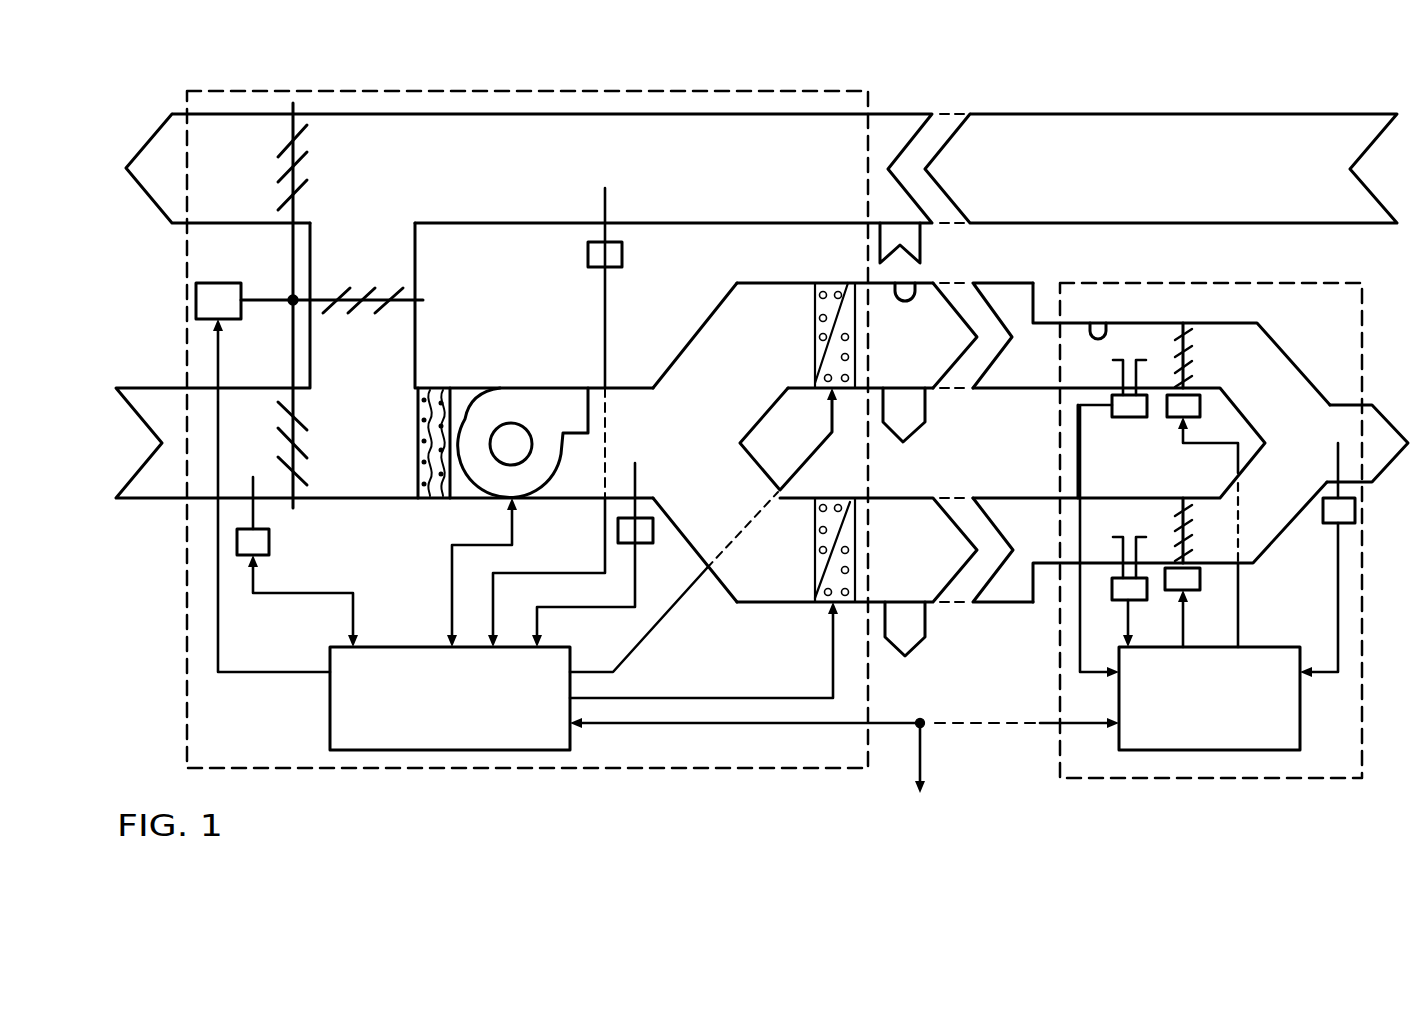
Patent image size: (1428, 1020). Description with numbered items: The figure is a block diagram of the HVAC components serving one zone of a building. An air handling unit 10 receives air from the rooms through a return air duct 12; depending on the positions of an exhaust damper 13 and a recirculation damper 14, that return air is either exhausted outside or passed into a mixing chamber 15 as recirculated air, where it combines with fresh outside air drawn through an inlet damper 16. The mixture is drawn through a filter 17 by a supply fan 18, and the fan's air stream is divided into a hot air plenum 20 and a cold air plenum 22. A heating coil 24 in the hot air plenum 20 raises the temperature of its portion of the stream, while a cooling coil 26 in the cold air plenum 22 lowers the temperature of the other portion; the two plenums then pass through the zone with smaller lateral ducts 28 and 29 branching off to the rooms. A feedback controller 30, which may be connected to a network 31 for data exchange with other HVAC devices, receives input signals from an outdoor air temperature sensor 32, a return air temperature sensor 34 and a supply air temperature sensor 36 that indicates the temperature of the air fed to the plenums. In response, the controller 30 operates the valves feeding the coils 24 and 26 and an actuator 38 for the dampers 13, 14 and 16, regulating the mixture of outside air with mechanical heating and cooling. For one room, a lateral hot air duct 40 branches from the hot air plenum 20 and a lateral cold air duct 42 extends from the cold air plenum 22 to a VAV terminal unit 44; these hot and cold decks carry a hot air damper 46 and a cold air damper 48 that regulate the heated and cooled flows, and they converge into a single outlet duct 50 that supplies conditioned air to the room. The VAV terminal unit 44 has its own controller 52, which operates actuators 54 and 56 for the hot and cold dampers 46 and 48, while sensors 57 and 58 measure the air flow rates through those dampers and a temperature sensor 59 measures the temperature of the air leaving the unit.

The air handling unit 10 is at (697, 768).
The return air duct 12 is at (740, 118).
The exhaust damper 13 is at (300, 165).
The recirculation damper 14 is at (382, 318).
The mixing chamber 15 is at (398, 489).
The inlet damper 16 is at (298, 447).
The filter 17 is at (435, 388).
The supply fan 18 is at (545, 412).
The hot air plenum 20 is at (897, 498).
The cold air plenum 22 is at (912, 292).
The heating coil 24 is at (823, 602).
The cooling coil 26 is at (830, 285).
The lateral duct 28 is at (928, 618).
The lateral duct 29 is at (928, 405).
The feedback controller 30 is at (330, 706).
The network 31 is at (923, 752).
The outdoor air temperature sensor 32 is at (269, 543).
The return air temperature sensor 34 is at (622, 256).
The supply air temperature sensor 36 is at (653, 530).
The actuator 38 is at (196, 301).
The lateral hot air duct 40 is at (1093, 499).
The lateral cold air duct 42 is at (1098, 328).
The VAV terminal unit 44 is at (1135, 778).
The hot air damper 46 is at (1177, 510).
The cold air damper 48 is at (1183, 325).
The outlet duct 50 is at (1343, 410).
The controller 52 is at (1208, 750).
The actuator 54 is at (1200, 580).
The actuator 56 is at (1200, 405).
The sensor 57 is at (1120, 594).
The sensor 58 is at (1130, 417).
The temperature sensor 59 is at (1355, 513).